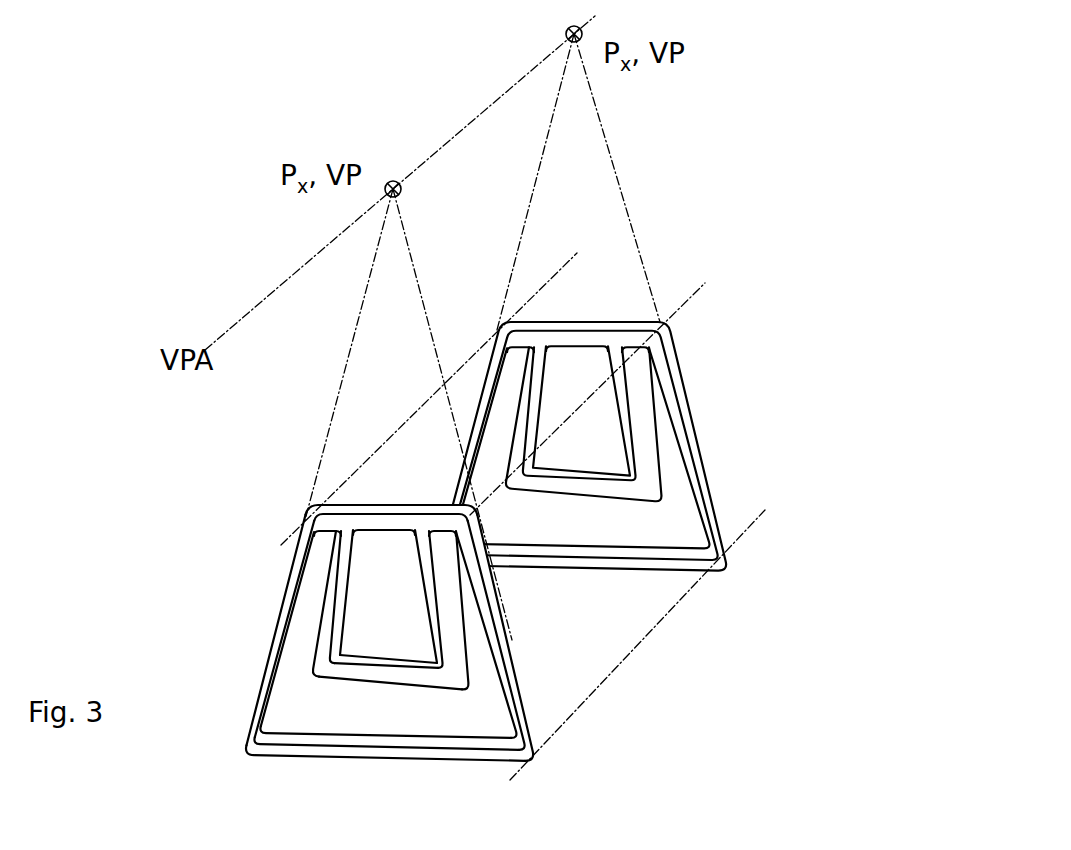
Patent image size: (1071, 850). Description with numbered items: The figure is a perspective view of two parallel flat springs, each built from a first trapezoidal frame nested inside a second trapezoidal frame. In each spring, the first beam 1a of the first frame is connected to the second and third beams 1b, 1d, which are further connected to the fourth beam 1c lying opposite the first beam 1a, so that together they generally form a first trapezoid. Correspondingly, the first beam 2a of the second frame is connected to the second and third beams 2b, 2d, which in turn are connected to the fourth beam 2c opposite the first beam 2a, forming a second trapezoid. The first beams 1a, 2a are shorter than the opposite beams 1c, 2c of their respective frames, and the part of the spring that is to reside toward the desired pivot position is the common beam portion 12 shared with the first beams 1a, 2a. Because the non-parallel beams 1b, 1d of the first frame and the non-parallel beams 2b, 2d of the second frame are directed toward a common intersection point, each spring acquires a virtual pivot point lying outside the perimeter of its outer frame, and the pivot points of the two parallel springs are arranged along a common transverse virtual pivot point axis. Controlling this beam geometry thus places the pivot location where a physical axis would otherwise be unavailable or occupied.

The first beam of the first frame 1a is at (370, 531).
The common beam portion 12 is at (606, 565).
The second beam of the first frame 1b is at (328, 629).
The fourth beam of the first frame 1c is at (373, 675).
The third beam of the first frame 1d is at (440, 623).
The first beam of the second frame 2a is at (337, 522).
The second beam of the second frame 2b is at (267, 660).
The fourth beam of the second frame 2c is at (357, 758).
The third beam of the second frame 2d is at (497, 640).